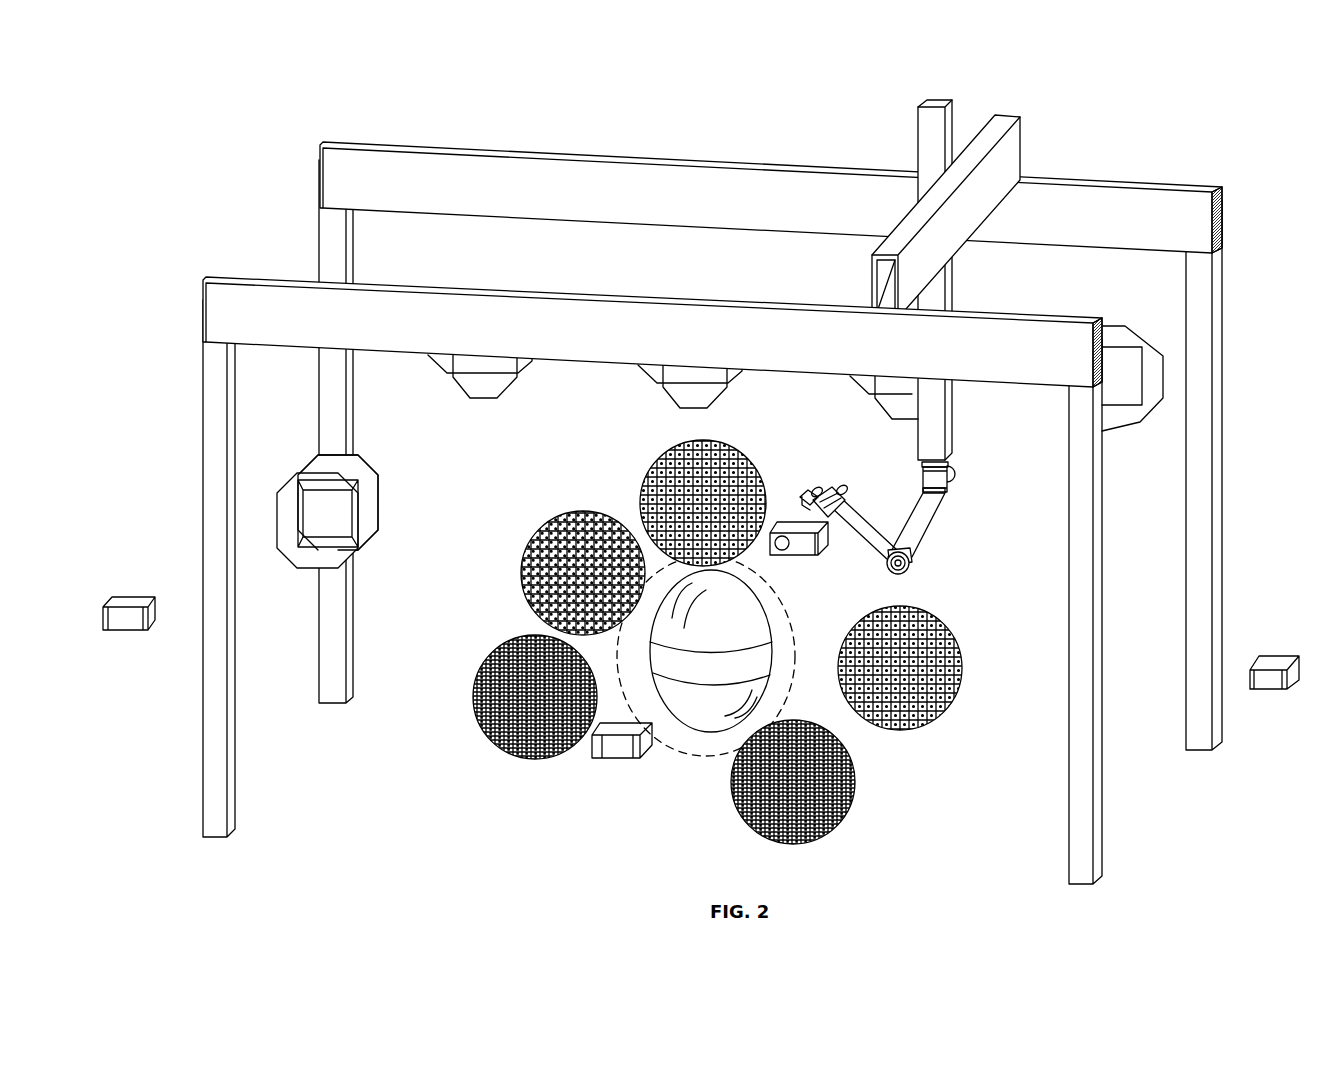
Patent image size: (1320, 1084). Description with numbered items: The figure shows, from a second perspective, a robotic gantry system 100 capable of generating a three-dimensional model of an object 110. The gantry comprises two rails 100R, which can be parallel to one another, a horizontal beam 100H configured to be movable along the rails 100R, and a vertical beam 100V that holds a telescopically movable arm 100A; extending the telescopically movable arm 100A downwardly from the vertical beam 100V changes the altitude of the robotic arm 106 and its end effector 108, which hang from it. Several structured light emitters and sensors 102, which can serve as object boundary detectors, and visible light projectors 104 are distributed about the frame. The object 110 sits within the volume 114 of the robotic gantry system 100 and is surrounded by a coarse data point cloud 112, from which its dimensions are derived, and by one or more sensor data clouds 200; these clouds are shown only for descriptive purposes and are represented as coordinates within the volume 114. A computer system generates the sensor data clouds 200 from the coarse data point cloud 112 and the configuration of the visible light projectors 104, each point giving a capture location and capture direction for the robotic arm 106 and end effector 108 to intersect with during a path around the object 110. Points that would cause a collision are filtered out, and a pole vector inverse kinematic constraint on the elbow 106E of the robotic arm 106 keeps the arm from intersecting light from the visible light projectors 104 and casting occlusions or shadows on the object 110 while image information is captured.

The robotic gantry system 100 is at (711, 414).
The rails 100R is at (670, 155).
The vertical beam 100V is at (956, 276).
The horizontal beam 100H is at (1024, 131).
The telescopically movable arm 100A is at (965, 466).
The structured light emitters and sensors 102 is at (134, 594).
The visible light projectors/emitters 104 is at (520, 385).
The robotic arm 106 is at (924, 537).
The elbow 106E is at (910, 571).
The end effector 108 is at (820, 481).
The object 110 is at (777, 684).
The coarse data point cloud 112 is at (670, 758).
The volume 114 is at (432, 693).
The sensor data clouds 200 is at (660, 455).